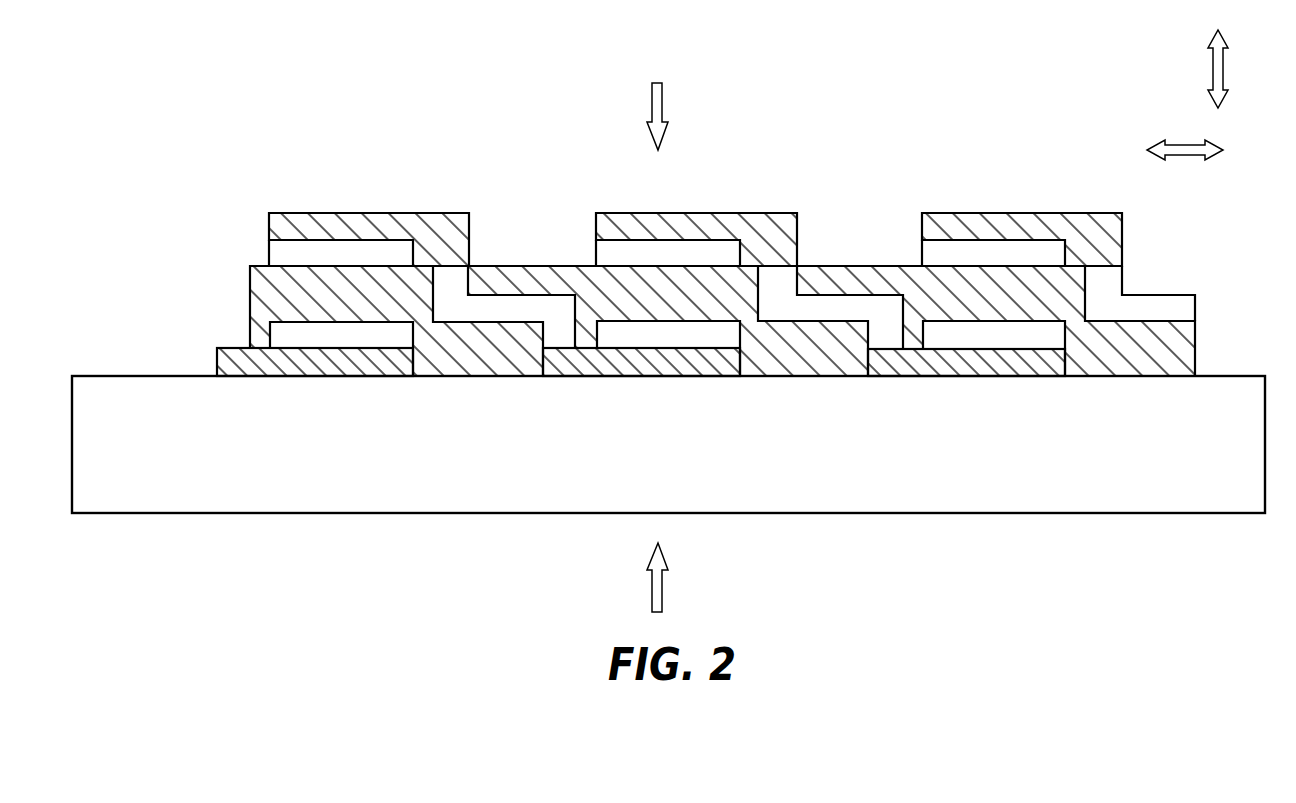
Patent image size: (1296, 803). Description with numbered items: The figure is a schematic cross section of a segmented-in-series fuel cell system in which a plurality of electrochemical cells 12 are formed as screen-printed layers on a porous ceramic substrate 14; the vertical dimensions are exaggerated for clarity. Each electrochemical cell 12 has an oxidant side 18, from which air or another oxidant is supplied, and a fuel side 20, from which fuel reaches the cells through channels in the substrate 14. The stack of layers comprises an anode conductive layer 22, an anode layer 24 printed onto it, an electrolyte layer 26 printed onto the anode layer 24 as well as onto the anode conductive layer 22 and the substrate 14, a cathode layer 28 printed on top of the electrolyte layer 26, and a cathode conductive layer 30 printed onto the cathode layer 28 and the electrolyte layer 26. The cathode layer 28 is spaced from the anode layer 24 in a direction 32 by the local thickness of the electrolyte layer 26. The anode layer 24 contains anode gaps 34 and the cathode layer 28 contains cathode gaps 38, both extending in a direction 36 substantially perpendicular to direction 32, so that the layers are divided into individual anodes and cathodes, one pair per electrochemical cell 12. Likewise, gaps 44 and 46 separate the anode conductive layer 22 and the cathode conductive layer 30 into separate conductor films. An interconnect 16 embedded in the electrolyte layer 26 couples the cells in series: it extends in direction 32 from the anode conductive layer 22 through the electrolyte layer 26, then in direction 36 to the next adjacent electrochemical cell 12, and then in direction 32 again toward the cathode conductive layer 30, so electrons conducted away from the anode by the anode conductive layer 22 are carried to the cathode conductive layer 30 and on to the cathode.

The electrochemical cell 12 is at (1083, 165).
The substrate 14 is at (925, 515).
The interconnect 16 is at (508, 305).
The oxidant side 18 is at (652, 98).
The fuel side 20 is at (650, 598).
The anode conductive layer 22 is at (247, 378).
The anode layer 24 is at (286, 336).
The electrolyte layer 26 is at (258, 296).
The cathode layer 28 is at (604, 257).
The cathode conductive layer 30 is at (787, 232).
The direction 32 is at (1228, 68).
The anode gap 34 is at (413, 378).
The direction 36 is at (1185, 160).
The cathode gap 38 is at (740, 180).
The gap 44 is at (740, 378).
The gap 46 is at (922, 250).